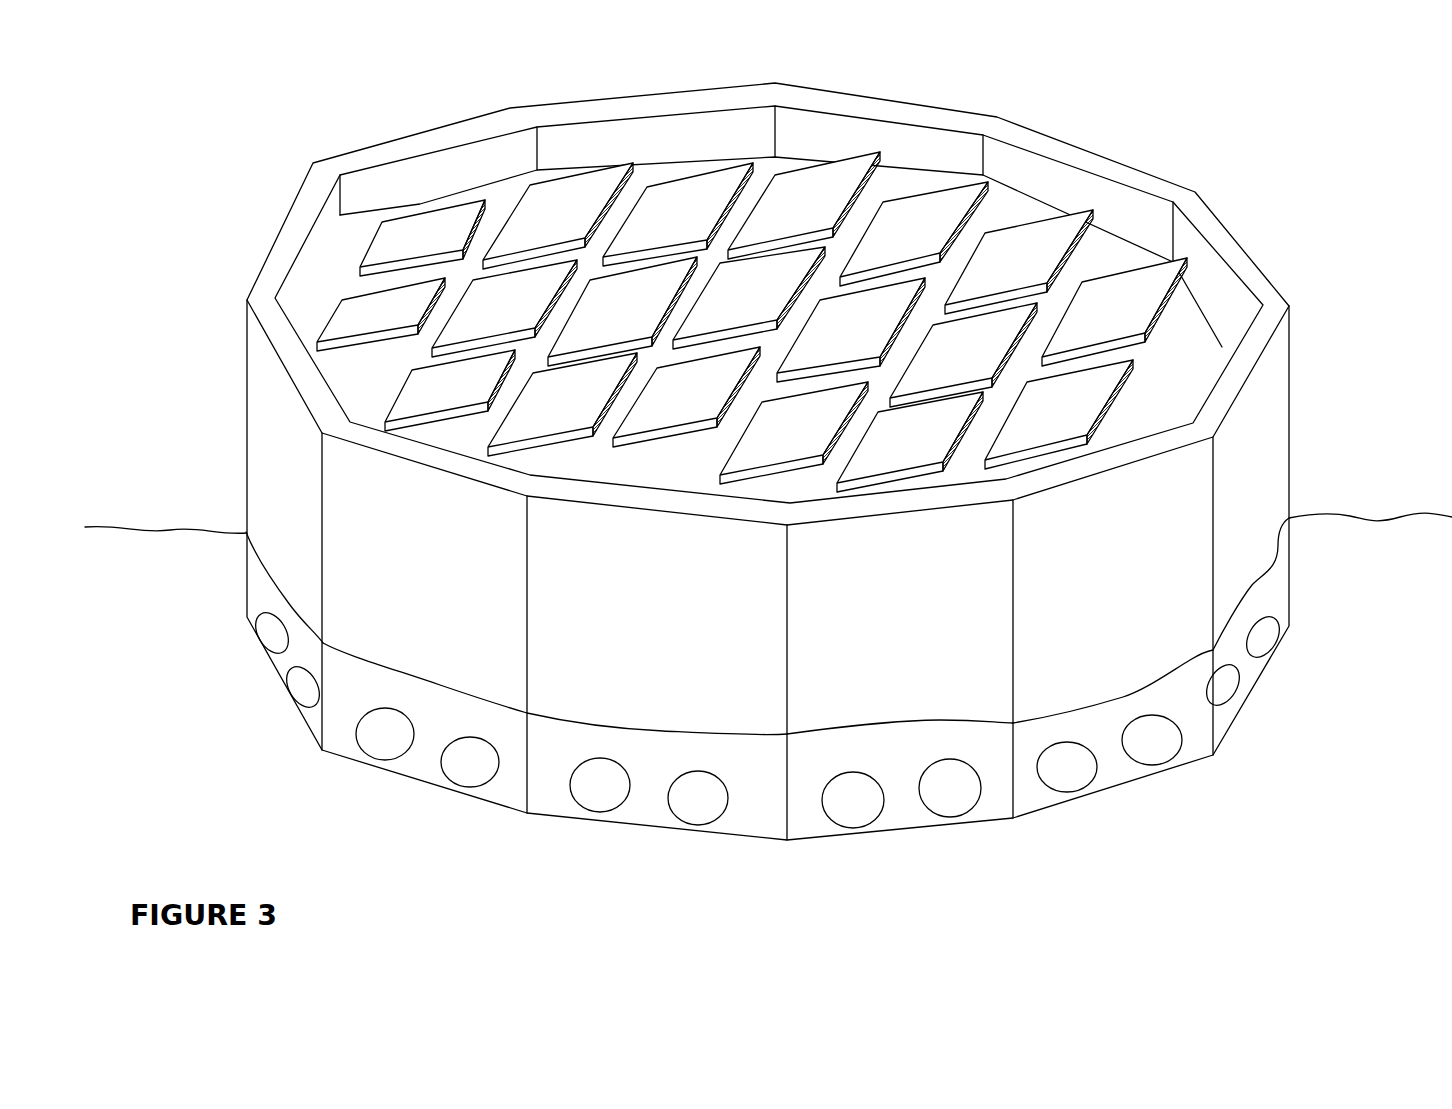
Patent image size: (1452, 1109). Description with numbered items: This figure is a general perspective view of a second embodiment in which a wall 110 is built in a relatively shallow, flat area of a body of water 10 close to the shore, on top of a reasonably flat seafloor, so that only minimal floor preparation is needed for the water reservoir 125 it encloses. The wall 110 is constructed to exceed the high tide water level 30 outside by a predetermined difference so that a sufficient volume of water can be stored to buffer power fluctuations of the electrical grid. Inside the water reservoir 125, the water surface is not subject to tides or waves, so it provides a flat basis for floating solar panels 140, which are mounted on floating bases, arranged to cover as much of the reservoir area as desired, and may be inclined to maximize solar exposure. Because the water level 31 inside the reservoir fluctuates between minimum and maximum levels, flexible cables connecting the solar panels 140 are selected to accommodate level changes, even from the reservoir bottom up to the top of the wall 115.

The body of water 10 is at (187, 673).
The high tide water level 30 is at (1383, 570).
The water level 31 is at (1189, 392).
The wall 110 is at (247, 385).
The top of the wall 115 is at (827, 92).
The water reservoir 125 is at (689, 474).
The floating solar panels 140 is at (562, 177).